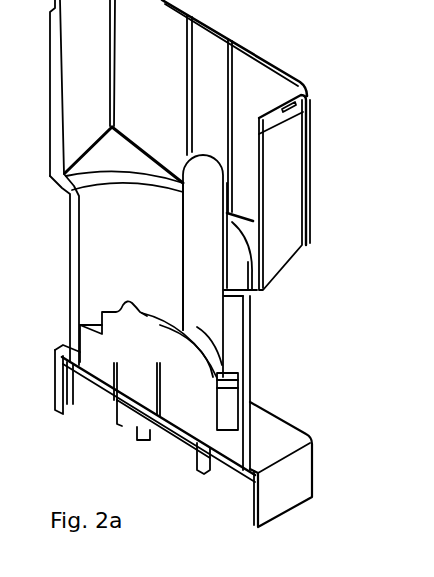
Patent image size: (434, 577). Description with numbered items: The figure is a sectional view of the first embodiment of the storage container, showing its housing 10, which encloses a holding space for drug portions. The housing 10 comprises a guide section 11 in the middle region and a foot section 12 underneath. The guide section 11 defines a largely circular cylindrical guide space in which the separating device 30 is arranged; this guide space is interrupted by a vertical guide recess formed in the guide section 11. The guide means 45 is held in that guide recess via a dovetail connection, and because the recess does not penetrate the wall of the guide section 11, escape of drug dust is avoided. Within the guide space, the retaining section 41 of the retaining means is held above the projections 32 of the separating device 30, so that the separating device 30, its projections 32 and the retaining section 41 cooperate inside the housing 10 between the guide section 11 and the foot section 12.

The housing 10 is at (287, 215).
The guide section 11 is at (253, 345).
The foot section 12 is at (288, 490).
The separating device 30 is at (112, 393).
The projections 32 is at (227, 415).
The retaining section 41 is at (238, 374).
The guide means 45 is at (203, 180).